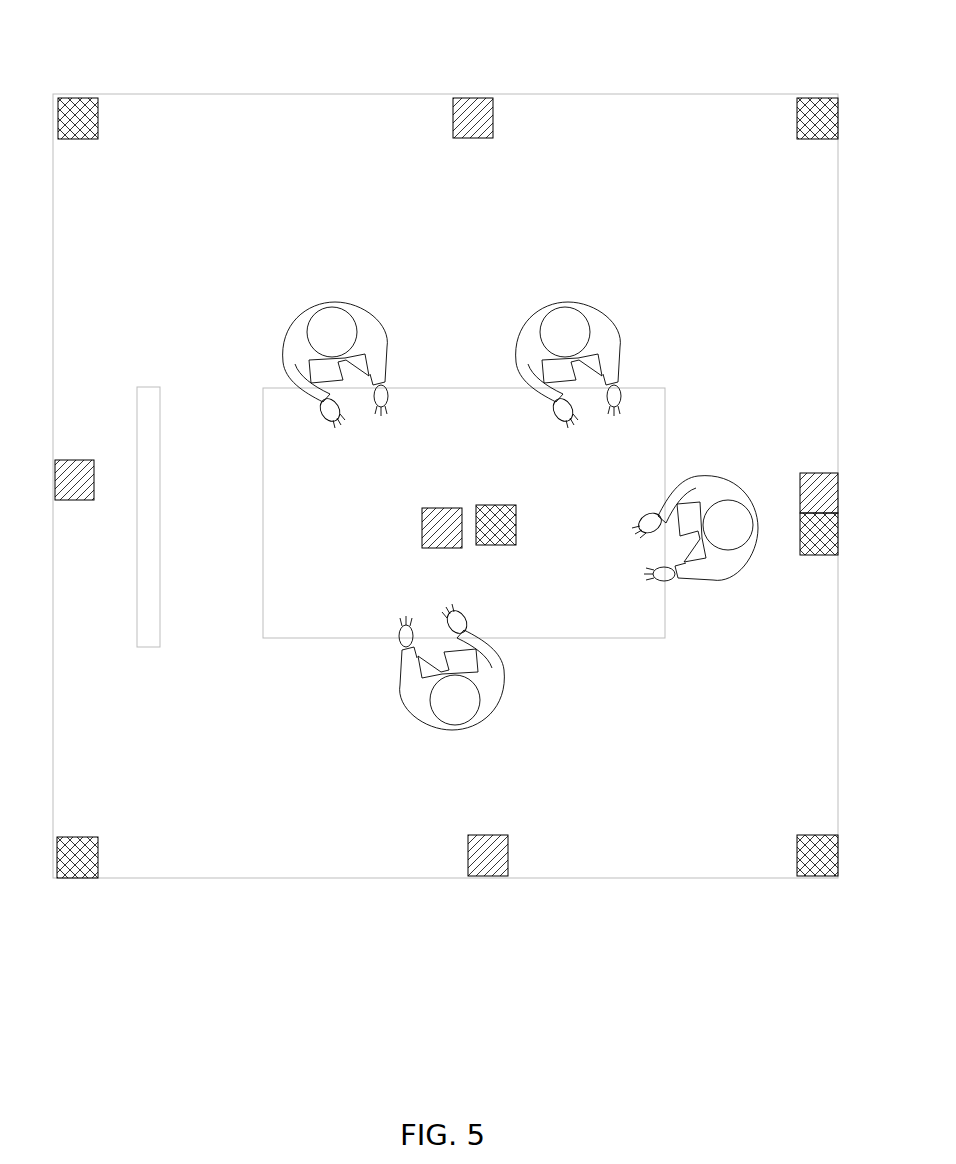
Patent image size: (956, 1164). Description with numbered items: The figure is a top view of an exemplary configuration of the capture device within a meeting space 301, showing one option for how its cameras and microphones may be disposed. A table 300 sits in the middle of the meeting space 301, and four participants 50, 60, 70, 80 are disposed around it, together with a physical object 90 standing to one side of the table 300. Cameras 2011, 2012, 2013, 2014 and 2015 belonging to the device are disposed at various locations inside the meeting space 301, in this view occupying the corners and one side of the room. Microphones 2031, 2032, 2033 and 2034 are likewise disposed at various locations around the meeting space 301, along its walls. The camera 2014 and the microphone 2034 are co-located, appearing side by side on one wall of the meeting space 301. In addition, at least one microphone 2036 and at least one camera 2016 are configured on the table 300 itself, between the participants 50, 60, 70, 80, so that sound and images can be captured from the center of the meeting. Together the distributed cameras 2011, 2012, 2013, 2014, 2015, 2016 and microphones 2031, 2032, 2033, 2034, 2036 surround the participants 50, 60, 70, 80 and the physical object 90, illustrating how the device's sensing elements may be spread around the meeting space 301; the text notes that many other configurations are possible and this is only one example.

The meeting space 301 is at (235, 93).
The table 300 is at (664, 388).
The physical object 90 is at (170, 645).
The participant 50 is at (353, 300).
The participant 60 is at (565, 302).
The participant 70 is at (718, 585).
The participant 80 is at (493, 705).
The camera 2011 is at (98, 138).
The camera 2012 is at (96, 837).
The camera 2013 is at (797, 832).
The camera 2014 is at (800, 556).
The camera 2015 is at (797, 139).
The camera 2016 is at (516, 544).
The microphone 2031 is at (493, 138).
The microphone 2032 is at (94, 460).
The microphone 2033 is at (483, 834).
The microphone 2034 is at (800, 473).
The microphone 2036 is at (421, 550).